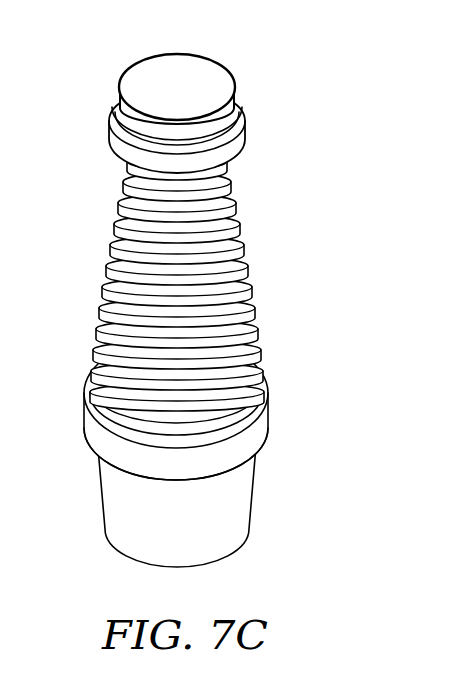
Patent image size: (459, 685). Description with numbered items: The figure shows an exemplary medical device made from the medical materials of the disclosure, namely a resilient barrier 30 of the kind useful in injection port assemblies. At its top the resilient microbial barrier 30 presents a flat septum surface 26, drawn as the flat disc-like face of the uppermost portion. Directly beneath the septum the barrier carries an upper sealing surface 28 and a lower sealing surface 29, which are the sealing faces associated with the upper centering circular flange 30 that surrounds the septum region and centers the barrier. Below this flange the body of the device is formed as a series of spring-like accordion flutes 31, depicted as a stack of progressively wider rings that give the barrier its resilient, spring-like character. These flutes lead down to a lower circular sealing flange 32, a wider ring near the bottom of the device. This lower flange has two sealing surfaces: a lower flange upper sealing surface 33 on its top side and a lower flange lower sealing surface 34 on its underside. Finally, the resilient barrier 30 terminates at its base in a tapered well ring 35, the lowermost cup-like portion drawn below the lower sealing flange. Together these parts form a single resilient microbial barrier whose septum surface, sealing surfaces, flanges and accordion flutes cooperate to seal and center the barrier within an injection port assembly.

The flat septum surface 26 is at (207, 73).
The upper sealing surface 28 is at (205, 128).
The lower sealing surface 29 is at (113, 112).
The resilient barrier 30 is at (109, 137).
The threads 31 is at (243, 273).
The lower circular sealing flange 32 is at (268, 420).
The lower flange upper sealing surface 33 is at (260, 385).
The lower flange lower sealing surface 34 is at (263, 456).
The tapered well ring 35 is at (98, 488).